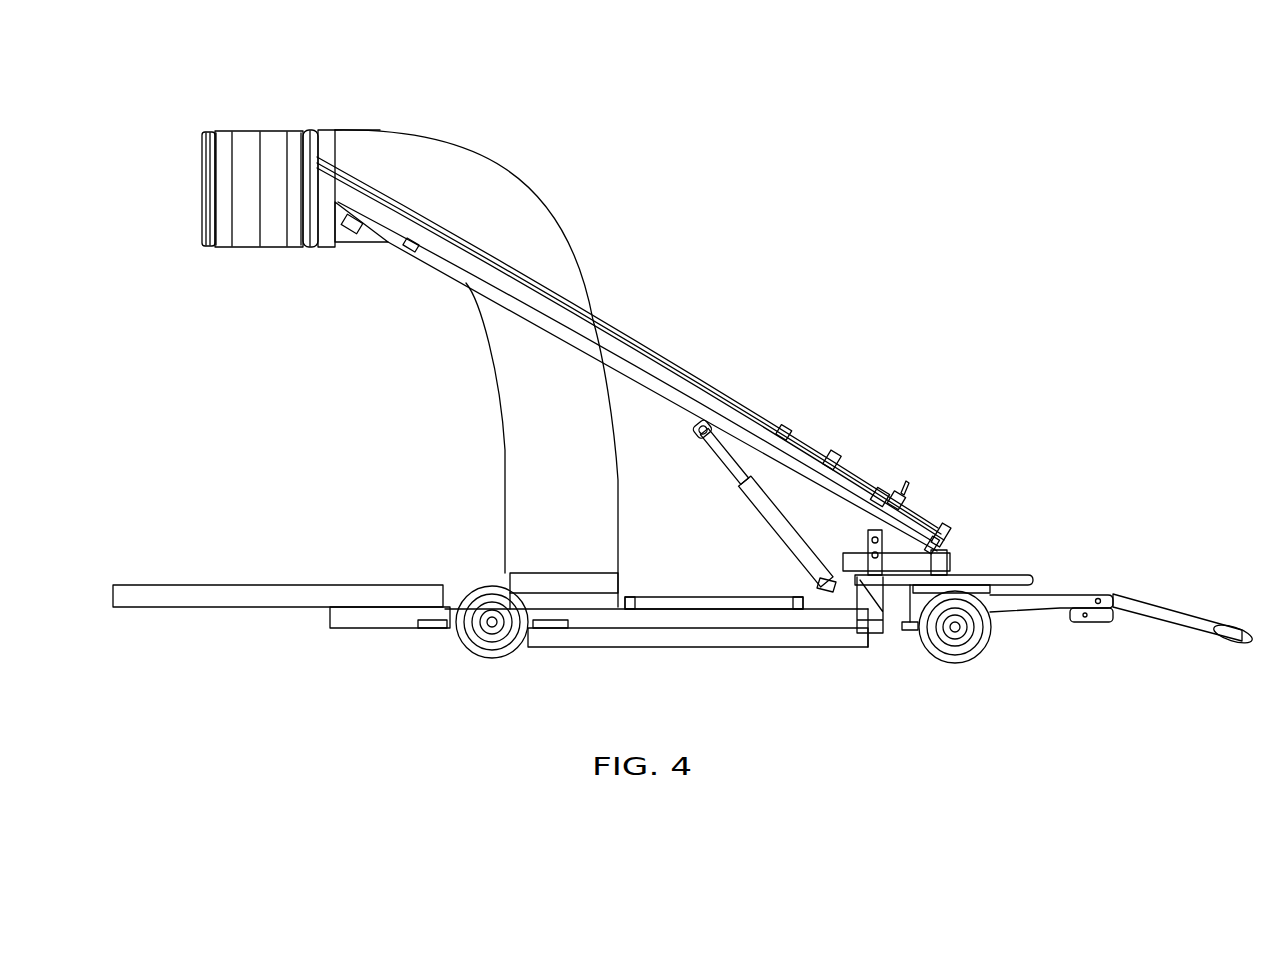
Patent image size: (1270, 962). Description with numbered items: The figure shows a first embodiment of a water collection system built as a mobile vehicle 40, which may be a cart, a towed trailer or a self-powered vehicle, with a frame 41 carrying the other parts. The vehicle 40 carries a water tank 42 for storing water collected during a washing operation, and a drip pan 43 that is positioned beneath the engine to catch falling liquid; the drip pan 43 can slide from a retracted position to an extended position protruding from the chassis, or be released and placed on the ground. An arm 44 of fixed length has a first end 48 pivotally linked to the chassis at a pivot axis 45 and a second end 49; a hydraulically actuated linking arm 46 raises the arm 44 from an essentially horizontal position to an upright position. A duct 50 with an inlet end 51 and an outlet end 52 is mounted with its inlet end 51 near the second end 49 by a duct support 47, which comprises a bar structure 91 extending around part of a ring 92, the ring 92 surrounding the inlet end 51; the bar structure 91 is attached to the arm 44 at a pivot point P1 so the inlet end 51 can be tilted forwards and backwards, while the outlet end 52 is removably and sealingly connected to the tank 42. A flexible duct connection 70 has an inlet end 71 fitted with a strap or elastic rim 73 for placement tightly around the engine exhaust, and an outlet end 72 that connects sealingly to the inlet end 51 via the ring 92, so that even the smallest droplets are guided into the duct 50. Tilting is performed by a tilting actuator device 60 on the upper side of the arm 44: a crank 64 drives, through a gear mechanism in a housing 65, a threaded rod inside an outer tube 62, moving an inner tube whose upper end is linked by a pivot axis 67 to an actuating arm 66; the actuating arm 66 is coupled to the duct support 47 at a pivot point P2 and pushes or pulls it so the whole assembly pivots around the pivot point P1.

The mobile vehicle 40 is at (1020, 652).
The frame 41 is at (745, 620).
The water tank 42 is at (795, 640).
The drip pan 43 is at (162, 585).
The arm 44 is at (596, 348).
The pivot axis 45 is at (948, 560).
The hydraulically actuated linking arm 46 is at (753, 514).
The duct support 47 is at (330, 262).
The first end 48 is at (948, 556).
The second end 49 is at (342, 155).
The duct 50 is at (502, 192).
The inlet end 51 is at (372, 130).
The outlet end 52 is at (514, 573).
The tilting actuator device 60 is at (932, 414).
The outer tube 62 is at (831, 455).
The crank 64 is at (880, 490).
The housing 65 is at (908, 492).
The actuating arm 66 is at (565, 295).
The pivot axis 67 is at (782, 426).
The flexible duct connection 70 is at (255, 130).
The inlet end 71 is at (205, 228).
The outlet end 72 is at (294, 250).
The elastic rim 73 is at (190, 136).
The bar structure 91 is at (307, 130).
The ring 92 is at (340, 250).
The pivot point P1 is at (314, 186).
The pivot point P2 is at (325, 130).